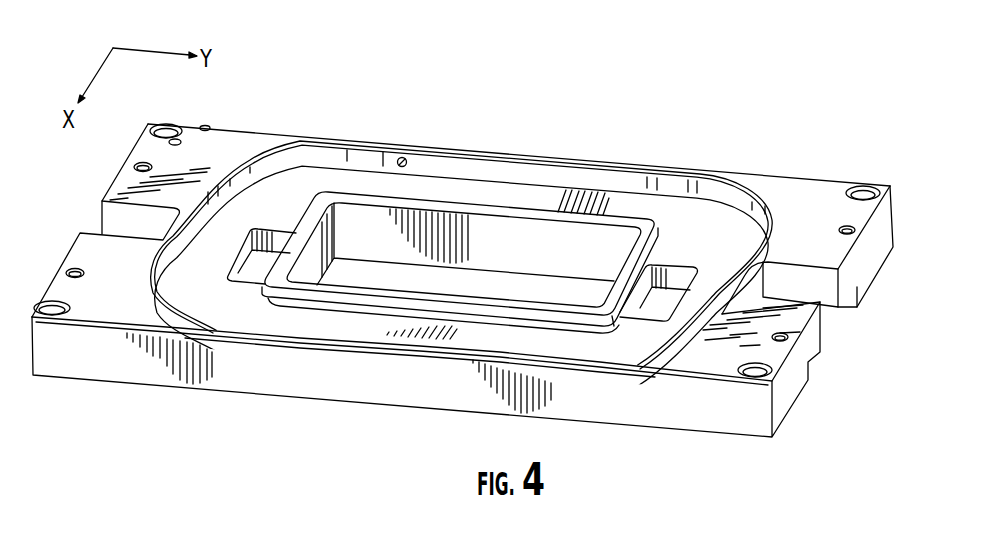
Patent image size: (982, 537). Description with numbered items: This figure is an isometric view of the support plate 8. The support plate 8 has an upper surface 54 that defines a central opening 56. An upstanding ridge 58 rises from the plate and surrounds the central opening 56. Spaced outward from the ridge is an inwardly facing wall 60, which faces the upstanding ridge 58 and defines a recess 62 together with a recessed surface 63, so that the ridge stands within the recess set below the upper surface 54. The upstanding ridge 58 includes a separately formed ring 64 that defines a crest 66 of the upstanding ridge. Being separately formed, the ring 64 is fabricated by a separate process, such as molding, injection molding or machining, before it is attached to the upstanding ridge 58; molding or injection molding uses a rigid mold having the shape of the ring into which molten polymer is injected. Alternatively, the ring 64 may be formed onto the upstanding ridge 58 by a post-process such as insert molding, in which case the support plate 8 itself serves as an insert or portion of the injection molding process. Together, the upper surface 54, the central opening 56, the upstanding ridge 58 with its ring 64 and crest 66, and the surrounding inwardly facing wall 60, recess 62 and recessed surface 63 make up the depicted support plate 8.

The support plate 8 is at (668, 50).
The upper surface 54 is at (223, 147).
The central opening 56 is at (470, 272).
The upstanding ridge 58 is at (310, 303).
The inwardly facing wall 60 is at (732, 193).
The recess 62 is at (297, 183).
The recessed surface 63 is at (370, 180).
The ring 64 is at (473, 305).
The crest 66 is at (610, 217).